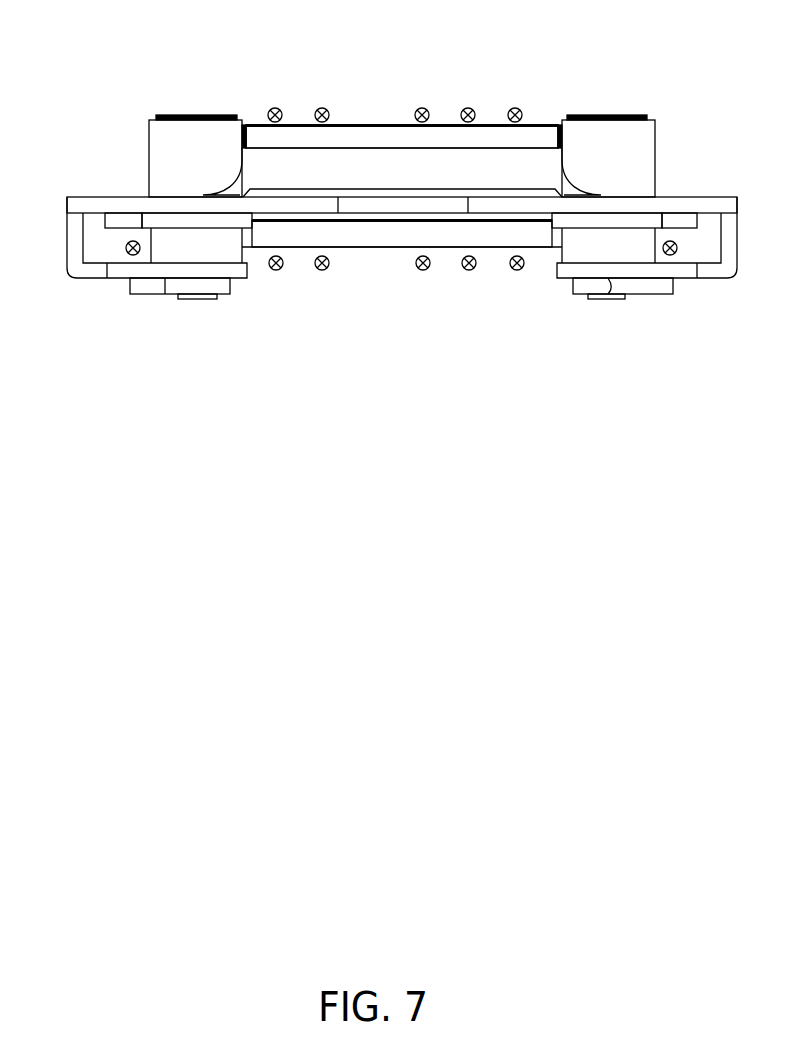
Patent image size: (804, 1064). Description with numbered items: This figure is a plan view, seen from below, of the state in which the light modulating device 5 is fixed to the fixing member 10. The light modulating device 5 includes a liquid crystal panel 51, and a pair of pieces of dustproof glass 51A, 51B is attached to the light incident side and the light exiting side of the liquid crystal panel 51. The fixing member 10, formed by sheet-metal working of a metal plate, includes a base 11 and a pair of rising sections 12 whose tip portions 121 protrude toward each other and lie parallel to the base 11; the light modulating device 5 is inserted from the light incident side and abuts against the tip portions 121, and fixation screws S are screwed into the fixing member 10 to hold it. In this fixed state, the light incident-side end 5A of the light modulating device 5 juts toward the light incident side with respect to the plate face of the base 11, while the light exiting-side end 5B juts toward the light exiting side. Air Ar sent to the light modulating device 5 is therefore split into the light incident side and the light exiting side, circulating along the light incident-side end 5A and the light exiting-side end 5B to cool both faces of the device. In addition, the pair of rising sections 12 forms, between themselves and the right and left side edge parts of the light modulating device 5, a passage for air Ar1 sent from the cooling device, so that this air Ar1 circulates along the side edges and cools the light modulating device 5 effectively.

The light modulating device 5 is at (643, 148).
The light incident-side end 5A is at (373, 125).
The light exiting-side end 5B is at (383, 248).
The liquid crystal panel 51 is at (548, 133).
The dustproof glass 51A is at (348, 125).
The dustproof glass 51B is at (360, 247).
The fixing member 10 is at (70, 336).
The base 11 is at (688, 197).
The rising section 12 is at (78, 238).
The tip portion 121 is at (120, 270).
The fixation screw S is at (183, 115).
The air Ar is at (275, 107).
The air Ar1 is at (128, 242).